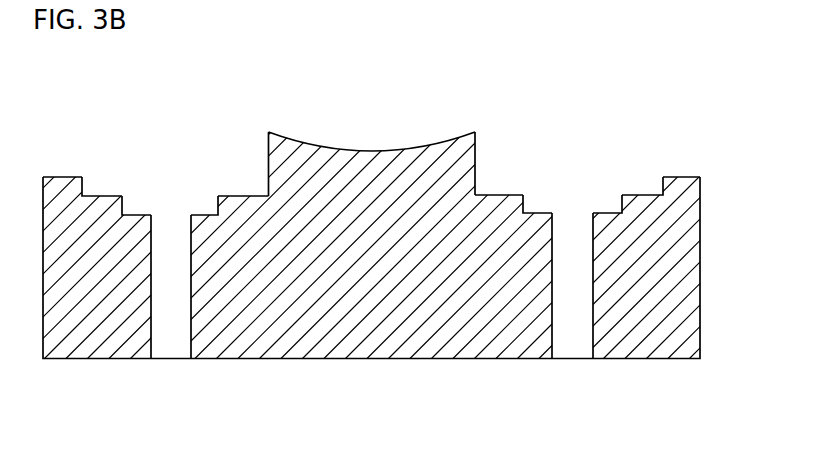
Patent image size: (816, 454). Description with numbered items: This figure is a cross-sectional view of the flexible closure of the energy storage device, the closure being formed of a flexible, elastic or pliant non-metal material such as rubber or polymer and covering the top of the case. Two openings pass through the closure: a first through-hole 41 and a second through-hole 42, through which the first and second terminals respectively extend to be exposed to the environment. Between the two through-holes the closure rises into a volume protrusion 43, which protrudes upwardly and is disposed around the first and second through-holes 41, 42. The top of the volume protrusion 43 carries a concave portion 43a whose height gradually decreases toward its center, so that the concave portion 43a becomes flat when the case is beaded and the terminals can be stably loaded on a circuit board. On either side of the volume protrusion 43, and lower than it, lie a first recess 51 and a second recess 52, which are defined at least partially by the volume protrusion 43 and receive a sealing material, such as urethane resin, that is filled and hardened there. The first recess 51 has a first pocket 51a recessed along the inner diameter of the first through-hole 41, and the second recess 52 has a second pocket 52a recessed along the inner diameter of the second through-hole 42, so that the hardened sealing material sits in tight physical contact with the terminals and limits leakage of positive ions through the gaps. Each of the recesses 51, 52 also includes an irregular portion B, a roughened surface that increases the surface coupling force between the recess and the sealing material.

The first through-hole 41 is at (584, 310).
The second through-hole 42 is at (180, 312).
The volume protrusion 43 is at (474, 132).
The concave portion 43a is at (371, 151).
The first recess 51 is at (621, 190).
The first pocket 51a is at (527, 208).
The second recess 52 is at (241, 194).
The second pocket 52a is at (204, 215).
The irregular portion B is at (89, 177).